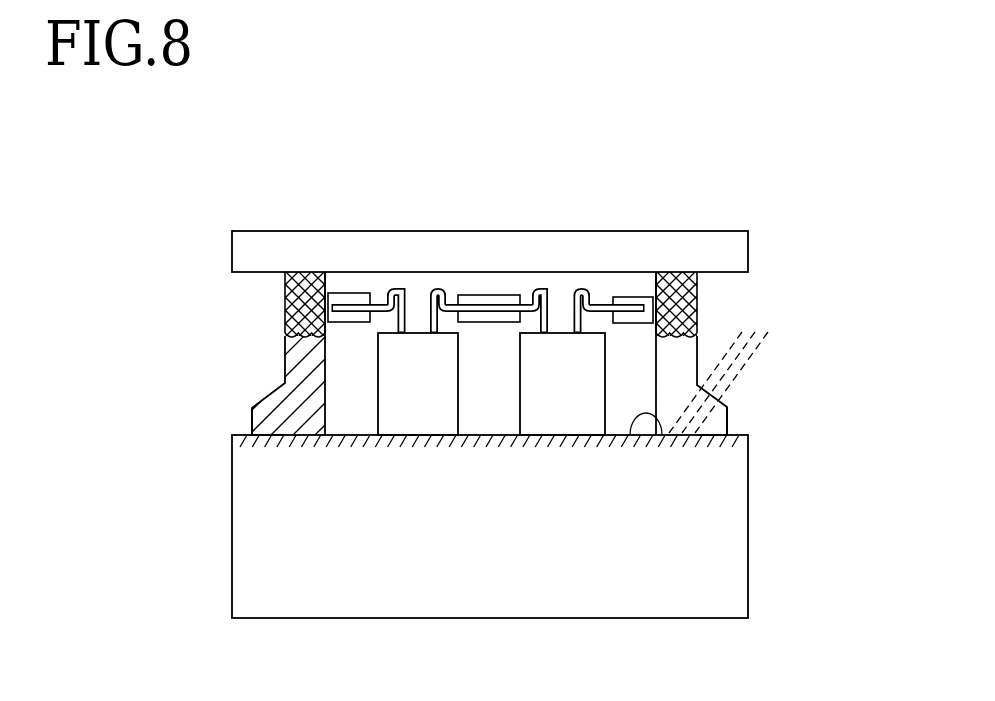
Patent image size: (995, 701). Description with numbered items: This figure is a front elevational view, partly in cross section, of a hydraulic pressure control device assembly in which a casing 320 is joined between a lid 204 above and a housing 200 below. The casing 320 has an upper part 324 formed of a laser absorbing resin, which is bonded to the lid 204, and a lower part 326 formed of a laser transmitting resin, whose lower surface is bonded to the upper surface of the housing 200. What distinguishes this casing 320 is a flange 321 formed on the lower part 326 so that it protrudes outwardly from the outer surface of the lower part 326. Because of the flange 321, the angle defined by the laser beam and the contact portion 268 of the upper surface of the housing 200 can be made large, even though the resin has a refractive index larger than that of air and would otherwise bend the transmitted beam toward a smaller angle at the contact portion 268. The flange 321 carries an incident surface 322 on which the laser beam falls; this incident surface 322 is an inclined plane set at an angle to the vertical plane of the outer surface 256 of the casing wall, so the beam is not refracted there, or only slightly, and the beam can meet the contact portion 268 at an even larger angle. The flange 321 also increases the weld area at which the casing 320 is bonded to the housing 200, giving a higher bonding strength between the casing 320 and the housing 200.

The housing 200 is at (656, 627).
The lid 204 is at (272, 243).
The outer surface 256 is at (698, 343).
The contact portion 268 is at (630, 435).
The casing 320 is at (263, 353).
The flange 321 is at (272, 416).
The incident surface 322 is at (722, 399).
The upper part 324 is at (285, 292).
The lower part 326 is at (276, 369).